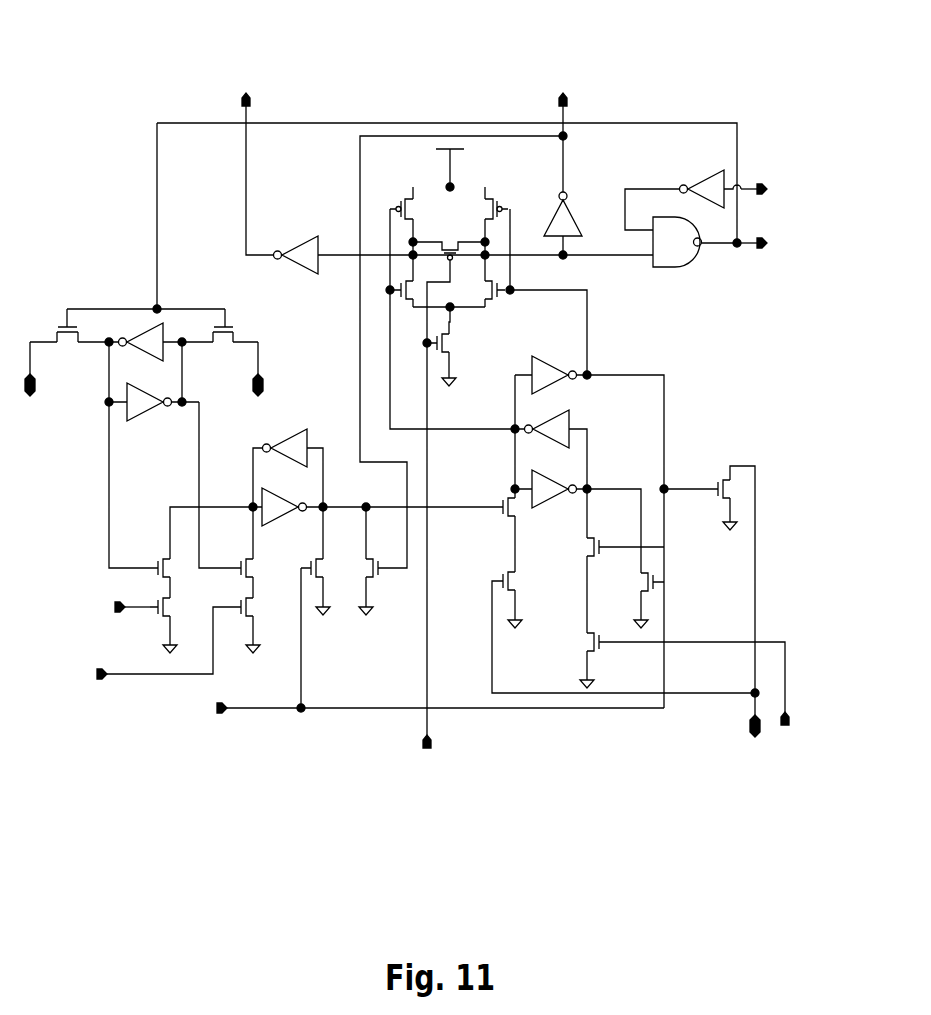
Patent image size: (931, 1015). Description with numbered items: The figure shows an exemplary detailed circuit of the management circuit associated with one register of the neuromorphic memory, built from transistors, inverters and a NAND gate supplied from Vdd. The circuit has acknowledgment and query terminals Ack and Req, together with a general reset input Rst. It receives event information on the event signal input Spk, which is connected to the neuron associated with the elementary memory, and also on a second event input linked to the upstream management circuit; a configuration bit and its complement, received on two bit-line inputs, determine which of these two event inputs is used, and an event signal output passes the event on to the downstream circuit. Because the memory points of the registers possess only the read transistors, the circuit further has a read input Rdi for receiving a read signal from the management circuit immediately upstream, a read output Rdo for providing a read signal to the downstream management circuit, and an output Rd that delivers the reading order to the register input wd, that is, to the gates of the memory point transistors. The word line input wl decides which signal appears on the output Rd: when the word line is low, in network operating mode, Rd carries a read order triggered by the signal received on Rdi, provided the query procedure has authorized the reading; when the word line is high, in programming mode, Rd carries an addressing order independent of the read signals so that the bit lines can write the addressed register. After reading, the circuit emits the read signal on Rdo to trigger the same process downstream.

The read signal output Rdo is at (252, 78).
The supply voltage Vdd is at (471, 167).
The word line input wl is at (765, 179).
The reading order output Rd is at (767, 242).
The event signal input Spk is at (135, 645).
The general reset input Rst is at (414, 708).
The read signal input Rdi is at (427, 758).
The query output Req is at (752, 750).
The acknowledgment input Ack is at (783, 748).